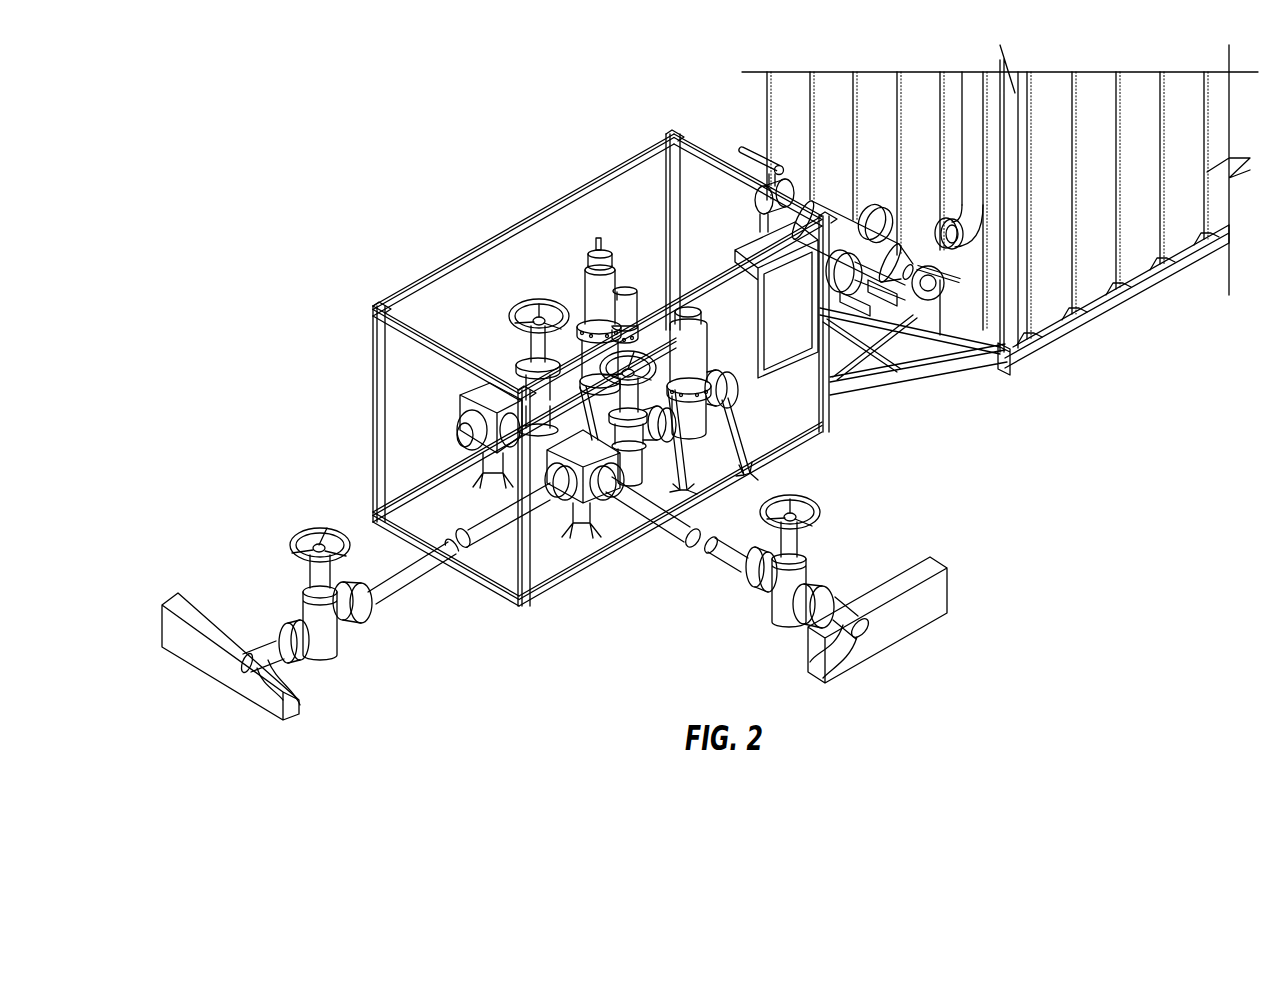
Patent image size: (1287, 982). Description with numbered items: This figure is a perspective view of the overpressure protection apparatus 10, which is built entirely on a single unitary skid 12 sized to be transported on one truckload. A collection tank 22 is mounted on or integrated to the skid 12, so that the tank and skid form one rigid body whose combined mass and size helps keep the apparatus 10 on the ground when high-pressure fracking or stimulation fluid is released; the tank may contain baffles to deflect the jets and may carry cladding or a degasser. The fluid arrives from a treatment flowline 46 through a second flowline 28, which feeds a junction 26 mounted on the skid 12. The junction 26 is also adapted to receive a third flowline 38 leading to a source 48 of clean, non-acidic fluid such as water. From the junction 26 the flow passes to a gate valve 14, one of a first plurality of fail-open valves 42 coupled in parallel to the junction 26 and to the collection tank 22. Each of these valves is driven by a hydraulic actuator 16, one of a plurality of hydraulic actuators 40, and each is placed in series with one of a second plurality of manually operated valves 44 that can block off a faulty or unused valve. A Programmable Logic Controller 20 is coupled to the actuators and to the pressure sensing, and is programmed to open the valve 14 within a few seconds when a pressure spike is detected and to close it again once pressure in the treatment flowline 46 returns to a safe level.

The overpressure protection apparatus 10 is at (318, 143).
The skid 12 is at (836, 430).
The valve 14 is at (758, 462).
The actuator 16 is at (670, 332).
The Programmable Logic Controller 20 is at (802, 323).
The collection tank 22 is at (1103, 308).
The junction 26 is at (597, 500).
The second flowline 28 is at (482, 520).
The third flowline 38 is at (687, 545).
The plurality of hydraulic actuators 40 is at (582, 297).
The first plurality of fail-open valves 42 is at (627, 316).
The second plurality of valves 44 is at (517, 375).
The treatment flowline 46 is at (210, 665).
The source 48 is at (893, 627).